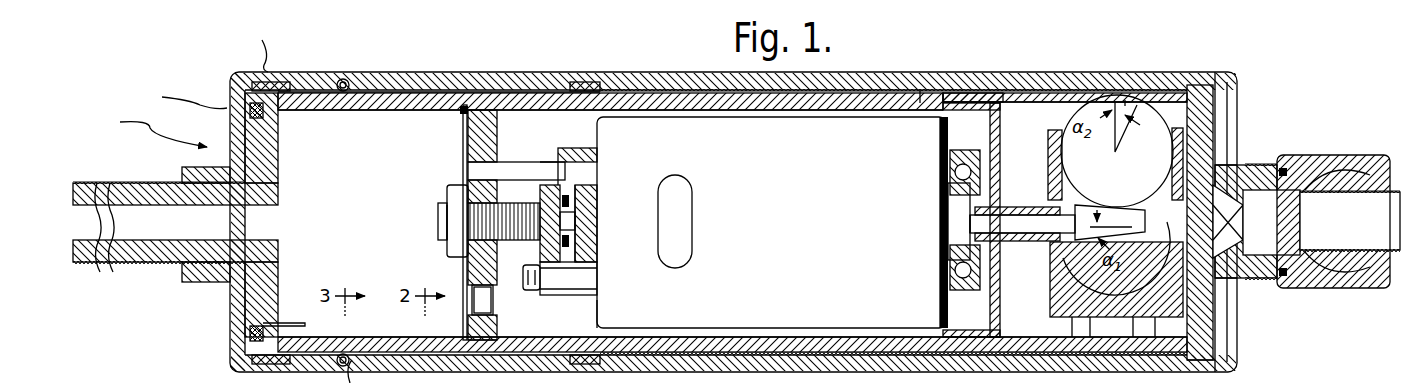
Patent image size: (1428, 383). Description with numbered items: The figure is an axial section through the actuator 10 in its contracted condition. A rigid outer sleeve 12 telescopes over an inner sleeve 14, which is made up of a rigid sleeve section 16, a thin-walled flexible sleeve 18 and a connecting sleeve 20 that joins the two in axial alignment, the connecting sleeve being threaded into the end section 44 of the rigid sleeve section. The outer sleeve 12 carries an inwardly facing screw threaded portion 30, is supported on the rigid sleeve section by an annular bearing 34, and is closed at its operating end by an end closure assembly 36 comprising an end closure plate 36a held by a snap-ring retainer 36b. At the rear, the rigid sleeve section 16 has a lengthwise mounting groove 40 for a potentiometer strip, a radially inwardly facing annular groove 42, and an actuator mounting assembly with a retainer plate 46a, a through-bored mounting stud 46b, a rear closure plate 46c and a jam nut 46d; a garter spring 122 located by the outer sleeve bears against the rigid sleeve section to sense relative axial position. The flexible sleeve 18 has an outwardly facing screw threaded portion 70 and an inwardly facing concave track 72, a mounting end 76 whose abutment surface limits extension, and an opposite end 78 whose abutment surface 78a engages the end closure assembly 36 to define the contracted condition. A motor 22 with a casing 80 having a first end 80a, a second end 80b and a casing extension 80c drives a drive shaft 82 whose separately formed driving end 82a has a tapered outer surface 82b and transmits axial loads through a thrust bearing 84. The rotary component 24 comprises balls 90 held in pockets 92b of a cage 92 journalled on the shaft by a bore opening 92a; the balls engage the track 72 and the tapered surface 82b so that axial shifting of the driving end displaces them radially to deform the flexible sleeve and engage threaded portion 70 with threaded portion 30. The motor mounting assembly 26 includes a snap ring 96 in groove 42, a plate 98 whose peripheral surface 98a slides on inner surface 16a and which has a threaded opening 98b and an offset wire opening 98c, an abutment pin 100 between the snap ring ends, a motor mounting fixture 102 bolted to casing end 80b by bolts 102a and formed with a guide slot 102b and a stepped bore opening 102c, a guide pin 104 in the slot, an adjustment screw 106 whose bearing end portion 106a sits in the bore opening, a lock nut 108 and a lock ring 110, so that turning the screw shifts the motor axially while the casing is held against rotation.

The actuator 10 is at (522, 62).
The outer sleeve 12 is at (400, 70).
The inner sleeve 14 is at (545, 90).
The rigid sleeve section 16 is at (410, 100).
The inner surface of rigid sleeve section 16a is at (350, 113).
The flexible sleeve 18 is at (1030, 85).
The connecting sleeve 20 is at (945, 125).
The motor 22 is at (702, 112).
The rotary component 24 is at (1168, 110).
The motor mounting assembly 26 is at (430, 185).
The screw threaded portion 30 is at (843, 100).
The annular bearing 34 is at (583, 78).
The end closure assembly 36 is at (1250, 312).
The end closure plate 36a is at (1205, 128).
The snap-ring retainer 36b is at (1232, 95).
The mounting groove 40 is at (778, 352).
The annular mounting groove 42 is at (462, 115).
The end section 44 is at (920, 87).
The retainer plate 46a is at (268, 175).
The mounting stud 46b is at (110, 272).
The rear closure plate 46c is at (228, 300).
The jam nut 46d is at (195, 168).
The screw threaded portion 70 is at (1112, 100).
The track 72 is at (1130, 103).
The mounting end 76 is at (965, 90).
The opposite end 78 is at (1182, 95).
The abutment surface 78a is at (1210, 340).
The motor casing 80 is at (763, 195).
The first end of casing 80a is at (942, 142).
The second end of casing 80b is at (595, 312).
The casing extension 80c is at (958, 238).
The drive shaft 82 is at (1005, 245).
The driving end 82a is at (1010, 235).
The tapered outer surface 82b is at (1137, 205).
The thrust bearing 84 is at (955, 152).
The rotary members 90 is at (1110, 175).
The cage 92 is at (1050, 305).
The bore opening 92a is at (1030, 207).
The pockets 92b is at (1048, 160).
The snap ring 96 is at (463, 140).
The plate 98 is at (500, 125).
The peripheral surface 98a is at (500, 340).
The threaded opening 98b is at (440, 211).
The offset opening 98c is at (478, 290).
The abutment pin 100 is at (475, 320).
The motor mounting fixture 102 is at (585, 255).
The bolts 102a is at (590, 277).
The guide slot 102b is at (575, 150).
The stepped bore opening 102c is at (605, 185).
The guide pin 104 is at (513, 167).
The adjustment screw 106 is at (440, 230).
The bearing end portion 106a is at (590, 212).
The lock nut 108 is at (450, 248).
The lock ring 110 is at (590, 236).
The garter spring 122 is at (352, 360).